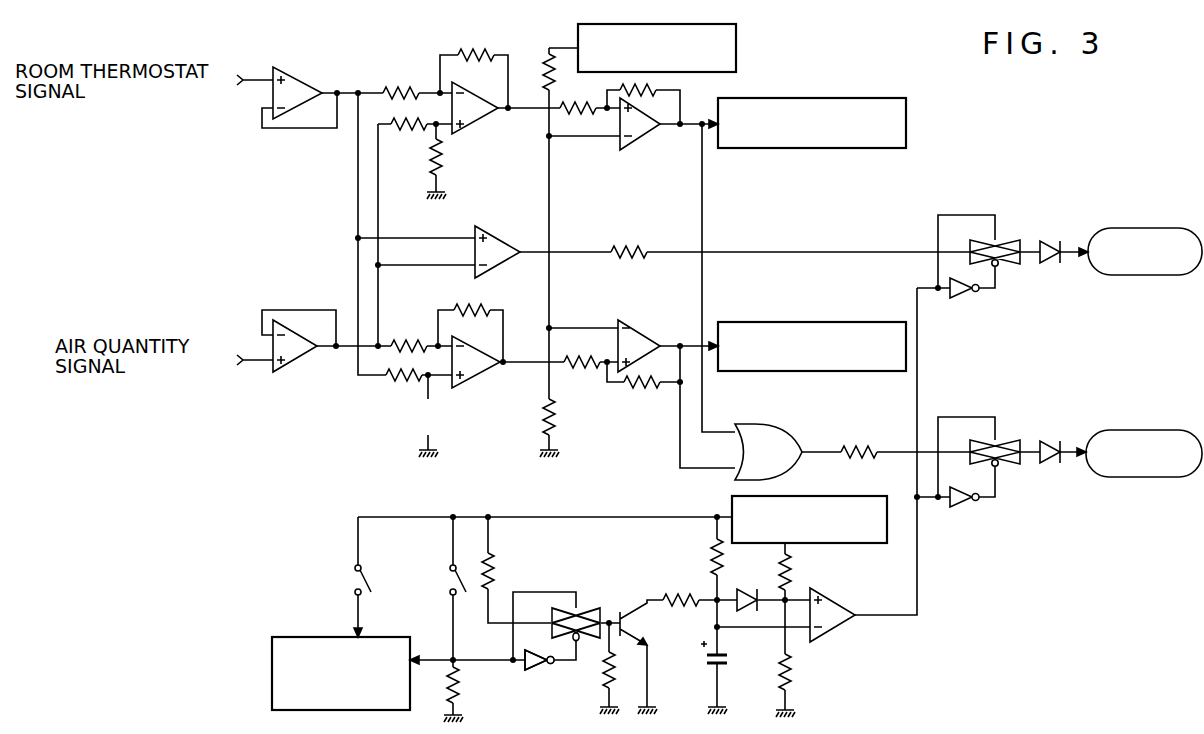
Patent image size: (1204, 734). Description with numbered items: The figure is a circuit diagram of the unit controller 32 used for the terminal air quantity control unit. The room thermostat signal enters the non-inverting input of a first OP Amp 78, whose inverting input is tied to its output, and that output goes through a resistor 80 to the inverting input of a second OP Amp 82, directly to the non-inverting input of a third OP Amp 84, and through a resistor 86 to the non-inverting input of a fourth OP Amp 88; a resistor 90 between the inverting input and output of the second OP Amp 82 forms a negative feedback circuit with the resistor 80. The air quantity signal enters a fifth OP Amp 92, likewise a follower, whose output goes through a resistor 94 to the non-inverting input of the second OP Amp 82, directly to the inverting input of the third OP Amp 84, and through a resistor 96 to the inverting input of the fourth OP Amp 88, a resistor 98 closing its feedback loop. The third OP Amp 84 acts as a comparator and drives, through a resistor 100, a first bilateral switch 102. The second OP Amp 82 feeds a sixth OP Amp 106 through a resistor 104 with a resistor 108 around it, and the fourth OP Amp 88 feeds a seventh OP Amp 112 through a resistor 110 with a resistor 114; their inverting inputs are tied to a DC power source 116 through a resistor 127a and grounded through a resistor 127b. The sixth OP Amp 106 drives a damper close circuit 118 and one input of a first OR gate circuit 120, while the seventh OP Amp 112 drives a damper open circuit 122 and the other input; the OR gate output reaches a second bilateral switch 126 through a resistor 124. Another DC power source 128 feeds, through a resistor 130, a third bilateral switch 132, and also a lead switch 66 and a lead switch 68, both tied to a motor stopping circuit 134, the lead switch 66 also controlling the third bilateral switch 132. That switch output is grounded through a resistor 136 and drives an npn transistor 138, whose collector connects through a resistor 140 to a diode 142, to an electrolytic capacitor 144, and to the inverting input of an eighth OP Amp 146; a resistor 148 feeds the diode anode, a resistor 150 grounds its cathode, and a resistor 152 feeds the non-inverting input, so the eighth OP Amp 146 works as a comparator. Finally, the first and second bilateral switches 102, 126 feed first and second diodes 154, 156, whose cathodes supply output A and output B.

The unit controller 32 is at (337, 251).
The lead switch 66 is at (452, 578).
The lead switch 68 is at (352, 578).
The first operational amplifier 78 is at (303, 70).
The resistor 80 is at (401, 85).
The second operational amplifier 82 is at (481, 126).
The third operational amplifier 84 is at (505, 233).
The resistor 86 is at (398, 381).
The fourth operational amplifier 88 is at (482, 370).
The resistor 90 is at (478, 48).
The fifth operational amplifier 92 is at (299, 359).
The resistor 94 is at (405, 130).
The resistor 96 is at (405, 342).
The resistor 98 is at (474, 302).
The resistor 100 is at (635, 247).
The first bilateral switch 102 is at (1004, 240).
The resistor 104 is at (579, 104).
The sixth operational amplifier 106 is at (646, 138).
The resistor 108 is at (650, 82).
The resistor 110 is at (581, 370).
The seventh operational amplifier 112 is at (643, 325).
The resistor 114 is at (640, 384).
The DC power source 116 is at (736, 42).
The damper close circuit 118 is at (906, 125).
The first OR gate circuit 120 is at (794, 436).
The damper open circuit 122 is at (806, 322).
The resistor 124 is at (863, 448).
The second bilateral switch 126 is at (1002, 440).
The resistor 127a is at (541, 75).
The resistor 127b is at (542, 414).
The DC power source 128 is at (732, 501).
The resistor 130 is at (494, 577).
The third bilateral switch 132 is at (582, 608).
The motor stopping circuit 134 is at (272, 677).
The resistor 136 is at (605, 662).
The npn transistor 138 is at (629, 608).
The resistor 140 is at (680, 605).
The diode 142 is at (749, 588).
The electrolytic capacitor 144 is at (706, 662).
The eighth operational amplifier 146 is at (833, 630).
The resistor 148 is at (710, 560).
The resistor 150 is at (791, 672).
The resistor 152 is at (791, 575).
The first diode 154 is at (1055, 244).
The second diode 156 is at (1052, 444).